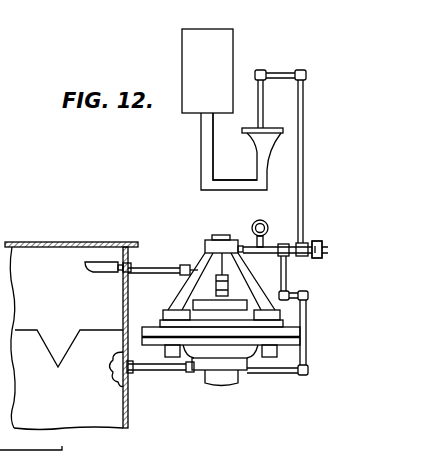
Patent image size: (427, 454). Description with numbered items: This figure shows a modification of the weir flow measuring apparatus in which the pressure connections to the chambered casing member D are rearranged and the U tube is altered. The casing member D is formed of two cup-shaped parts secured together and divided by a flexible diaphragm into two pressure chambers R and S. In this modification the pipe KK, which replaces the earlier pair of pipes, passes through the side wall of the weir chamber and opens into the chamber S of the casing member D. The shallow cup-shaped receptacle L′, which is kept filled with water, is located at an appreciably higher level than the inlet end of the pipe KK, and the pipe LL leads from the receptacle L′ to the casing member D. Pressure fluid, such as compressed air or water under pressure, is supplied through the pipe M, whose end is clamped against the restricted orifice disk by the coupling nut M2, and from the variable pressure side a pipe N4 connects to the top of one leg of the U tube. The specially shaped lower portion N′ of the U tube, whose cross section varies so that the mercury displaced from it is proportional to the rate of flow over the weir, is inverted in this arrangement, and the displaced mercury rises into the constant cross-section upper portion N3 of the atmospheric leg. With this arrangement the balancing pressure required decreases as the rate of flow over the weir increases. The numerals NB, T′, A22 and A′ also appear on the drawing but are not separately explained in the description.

The upper portion of U tube leg N3 is at (182, 57).
The lower portion of U tube N′ is at (246, 150).
The container wall NB is at (213, 148).
The pipe N4 is at (303, 147).
The pipe M is at (323, 257).
The coupling nut M2 is at (317, 240).
The chambered casing member D is at (255, 358).
The pressure chamber R is at (220, 289).
The pressure chamber S is at (221, 345).
The valve outlet T′ is at (213, 382).
The tank A22 is at (71, 336).
The tank wall patch A′ is at (112, 376).
The cup shaped member L′ is at (93, 262).
The pipe LL is at (150, 265).
The pipe KK is at (149, 373).